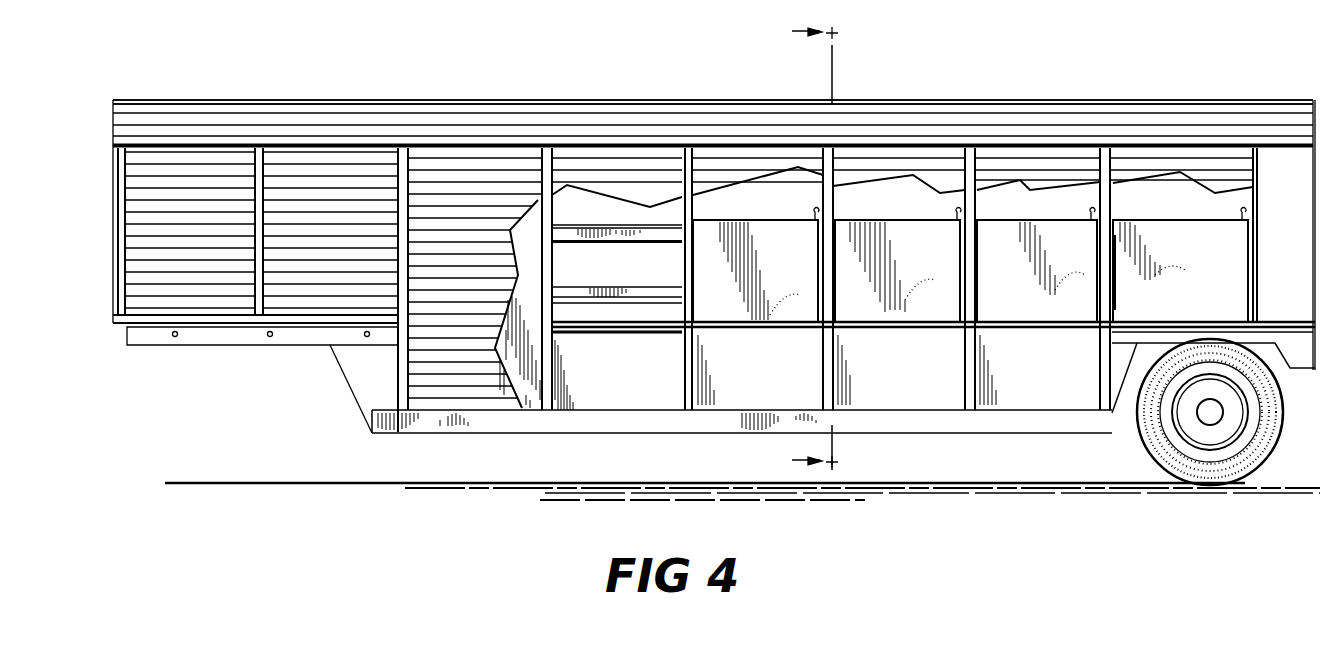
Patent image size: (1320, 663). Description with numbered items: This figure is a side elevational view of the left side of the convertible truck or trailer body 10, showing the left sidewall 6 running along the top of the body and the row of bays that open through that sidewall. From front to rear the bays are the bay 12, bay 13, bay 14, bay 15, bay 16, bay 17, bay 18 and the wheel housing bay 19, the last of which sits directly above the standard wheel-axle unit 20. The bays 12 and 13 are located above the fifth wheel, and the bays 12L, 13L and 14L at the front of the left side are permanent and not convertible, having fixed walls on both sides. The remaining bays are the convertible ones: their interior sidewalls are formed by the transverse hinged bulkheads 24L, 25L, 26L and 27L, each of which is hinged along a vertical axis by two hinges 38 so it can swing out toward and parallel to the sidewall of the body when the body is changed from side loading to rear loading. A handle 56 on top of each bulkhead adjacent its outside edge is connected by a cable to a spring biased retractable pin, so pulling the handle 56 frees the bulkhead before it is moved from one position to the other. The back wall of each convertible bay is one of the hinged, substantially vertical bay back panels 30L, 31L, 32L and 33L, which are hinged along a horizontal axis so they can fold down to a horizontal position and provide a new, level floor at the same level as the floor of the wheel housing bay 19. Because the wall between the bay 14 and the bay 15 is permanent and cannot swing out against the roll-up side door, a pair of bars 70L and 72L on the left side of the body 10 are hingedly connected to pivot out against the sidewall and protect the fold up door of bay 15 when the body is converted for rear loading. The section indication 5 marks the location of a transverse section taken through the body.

The section line 5- 5 is at (799, 247).
The sidewall 6 is at (133, 122).
The body 10 is at (1097, 70).
The bay 12 is at (188, 152).
The bay 13 is at (318, 152).
The bay 14 is at (455, 155).
The bay 15 is at (597, 155).
The bay 16 is at (745, 150).
The bay 17 is at (885, 150).
The bay 18 is at (1022, 150).
The wheel housing bay 19 is at (1170, 155).
The bay 12L is at (208, 302).
The bay 13L is at (332, 300).
The bay 14L is at (535, 410).
The bar 70L is at (607, 236).
The bar 72L is at (622, 293).
The bay back panel 30L is at (640, 328).
The bay back panel 31L is at (790, 325).
The bay back panel 32L is at (935, 325).
The bay back panel 33L is at (1072, 325).
The bulkhead 24L is at (755, 271).
The bulkhead 25L is at (897, 271).
The bulkhead 26L is at (1037, 271).
The bulkhead 27L is at (1180, 271).
The hinge 38 is at (836, 235).
The handle 56 is at (815, 210).
The wheel-axle unit 20 is at (1175, 425).